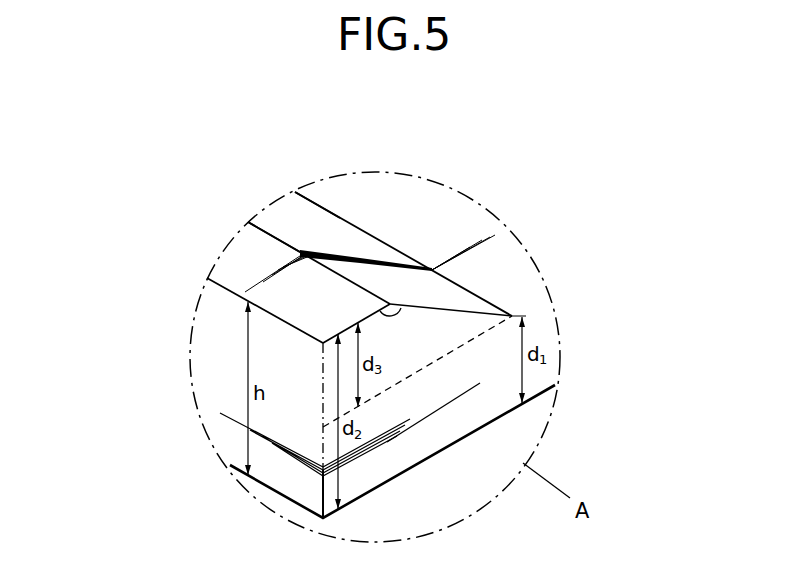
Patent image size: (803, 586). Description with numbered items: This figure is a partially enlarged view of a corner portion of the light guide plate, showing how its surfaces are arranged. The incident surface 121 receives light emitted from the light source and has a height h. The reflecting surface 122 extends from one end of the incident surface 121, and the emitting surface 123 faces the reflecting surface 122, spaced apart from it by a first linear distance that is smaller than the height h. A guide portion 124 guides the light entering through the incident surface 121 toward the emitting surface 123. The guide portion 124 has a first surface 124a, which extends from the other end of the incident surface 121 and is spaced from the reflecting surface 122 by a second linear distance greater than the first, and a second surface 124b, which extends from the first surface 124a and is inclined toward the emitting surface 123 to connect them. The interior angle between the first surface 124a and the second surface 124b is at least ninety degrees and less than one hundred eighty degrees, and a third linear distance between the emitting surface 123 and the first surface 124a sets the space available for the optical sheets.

The incident surface 121 is at (290, 473).
The reflecting surface 122 is at (377, 488).
The emitting surface 123 is at (513, 273).
The guide portion 124 is at (193, 130).
The first surface 124a is at (244, 258).
The second surface 124b is at (293, 216).